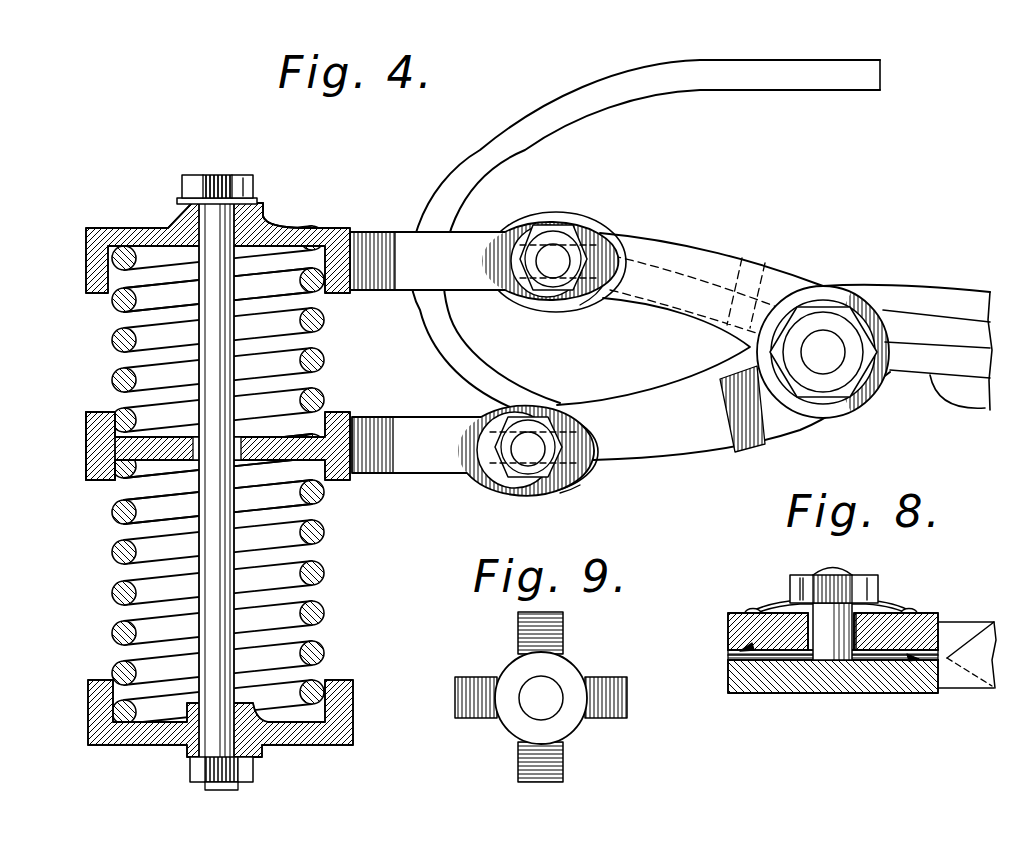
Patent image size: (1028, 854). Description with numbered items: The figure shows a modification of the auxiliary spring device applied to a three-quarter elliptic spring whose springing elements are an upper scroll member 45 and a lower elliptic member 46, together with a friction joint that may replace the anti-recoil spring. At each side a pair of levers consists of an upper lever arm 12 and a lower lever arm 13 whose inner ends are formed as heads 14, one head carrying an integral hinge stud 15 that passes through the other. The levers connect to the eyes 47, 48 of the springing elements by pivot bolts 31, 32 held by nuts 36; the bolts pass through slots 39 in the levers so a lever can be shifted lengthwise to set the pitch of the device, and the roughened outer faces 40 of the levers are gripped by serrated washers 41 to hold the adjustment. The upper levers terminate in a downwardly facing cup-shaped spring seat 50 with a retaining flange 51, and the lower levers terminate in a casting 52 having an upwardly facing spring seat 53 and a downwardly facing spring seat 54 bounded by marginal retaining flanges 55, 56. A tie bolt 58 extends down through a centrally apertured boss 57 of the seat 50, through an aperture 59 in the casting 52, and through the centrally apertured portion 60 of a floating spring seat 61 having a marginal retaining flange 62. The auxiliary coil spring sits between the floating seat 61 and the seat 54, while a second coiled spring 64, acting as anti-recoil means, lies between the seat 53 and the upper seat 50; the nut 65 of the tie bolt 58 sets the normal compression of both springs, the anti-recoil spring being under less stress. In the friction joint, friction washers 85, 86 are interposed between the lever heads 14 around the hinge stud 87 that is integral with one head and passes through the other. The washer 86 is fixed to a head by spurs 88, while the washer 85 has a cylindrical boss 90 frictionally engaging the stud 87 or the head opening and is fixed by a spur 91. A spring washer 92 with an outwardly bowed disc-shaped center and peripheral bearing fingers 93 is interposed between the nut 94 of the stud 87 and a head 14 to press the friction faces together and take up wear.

In FIG. 4, the upper lever arm 12 is at (403, 232).
In FIG. 4, the lower lever arm 13 is at (410, 422).
In FIG. 8, the head 14 is at (727, 615).
In FIG. 4, the hinge stud 15 is at (838, 370).
In FIG. 4, the pivot bolt 31 is at (548, 265).
In FIG. 4, the pivot bolt 32 is at (527, 450).
In FIG. 4, the nut 36 is at (540, 242).
In FIG. 4, the slot 39 is at (600, 257).
In FIG. 4, the roughened face 40 is at (593, 257).
In FIG. 4, the washer 41 is at (520, 258).
In FIG. 4, the upper scroll member 45 is at (652, 72).
In FIG. 4, the lower elliptic member 46 is at (925, 292).
In FIG. 4, the eye 47 is at (535, 405).
In FIG. 4, the eye 48 is at (557, 212).
In FIG. 4, the cup shaped spring seat 50 is at (292, 232).
In FIG. 4, the retaining flange 51 is at (86, 268).
In FIG. 4, the casting 52 is at (86, 447).
In FIG. 4, the upwardly facing spring seat 53 is at (173, 437).
In FIG. 4, the downwardly facing spring seat 54 is at (112, 508).
In FIG. 4, the marginal retaining flange 55 is at (107, 413).
In FIG. 4, the marginal retaining flange 56 is at (108, 479).
In FIG. 4, the centrally apertured boss 57 is at (200, 238).
In FIG. 4, the tie bolt 58 is at (207, 240).
In FIG. 4, the aperture 59 is at (240, 455).
In FIG. 4, the centrally apertured portion 60 is at (250, 743).
In FIG. 4, the floating spring seat 61 is at (138, 745).
In FIG. 4, the marginal retaining flange 62 is at (90, 685).
In FIG. 4, the second coiled spring 64 is at (112, 340).
In FIG. 4, the nut 65 is at (190, 772).
In FIG. 8, the friction washer 85 is at (727, 651).
In FIG. 8, the friction washer 86 is at (730, 662).
In FIG. 8, the hinge stud 87 is at (830, 640).
In FIG. 8, the spur 88 is at (909, 662).
In FIG. 8, the cylindrical boss 90 is at (880, 625).
In FIG. 8, the spur 91 is at (745, 658).
In FIG. 8, the spring washer 92 is at (778, 600).
In FIG. 9, the spring washer 92 is at (505, 668).
In FIG. 8, the peripheral bearing finger 93 is at (745, 609).
In FIG. 9, the peripheral bearing finger 93 is at (612, 677).
In FIG. 8, the nut 94 is at (870, 580).